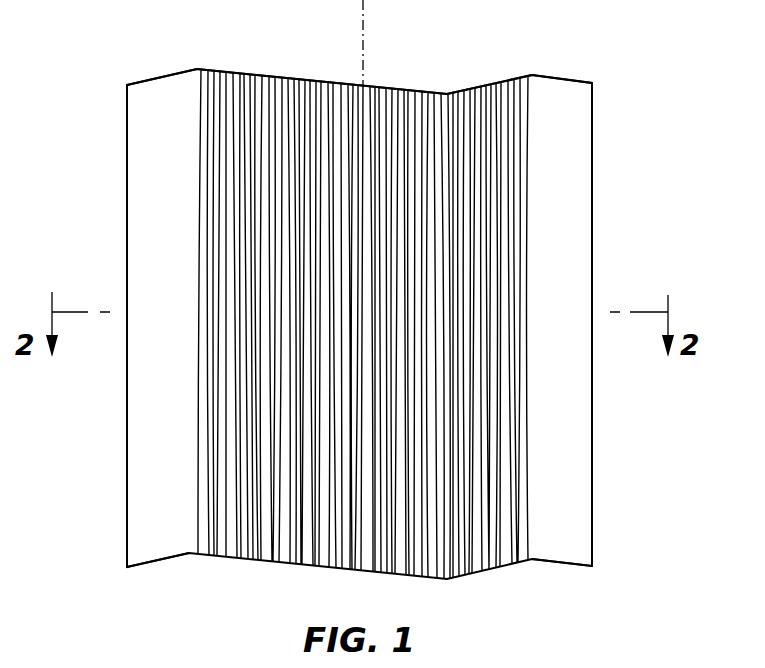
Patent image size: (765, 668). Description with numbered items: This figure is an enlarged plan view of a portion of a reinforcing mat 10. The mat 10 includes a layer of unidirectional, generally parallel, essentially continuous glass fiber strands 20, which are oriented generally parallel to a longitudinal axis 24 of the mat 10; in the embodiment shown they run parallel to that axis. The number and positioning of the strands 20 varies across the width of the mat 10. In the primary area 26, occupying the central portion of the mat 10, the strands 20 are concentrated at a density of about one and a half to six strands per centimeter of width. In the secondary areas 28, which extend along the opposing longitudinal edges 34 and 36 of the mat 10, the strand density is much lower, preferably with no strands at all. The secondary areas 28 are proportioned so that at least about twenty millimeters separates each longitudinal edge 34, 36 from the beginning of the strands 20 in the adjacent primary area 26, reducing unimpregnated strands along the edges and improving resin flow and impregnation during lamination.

The mat 10 is at (638, 194).
The strands 20 is at (313, 540).
The longitudinal axis 24 is at (365, 40).
The primary area 26 is at (285, 107).
The secondary area 28 is at (150, 125).
The longitudinal edge 34 is at (126, 497).
The longitudinal edge 36 is at (592, 517).